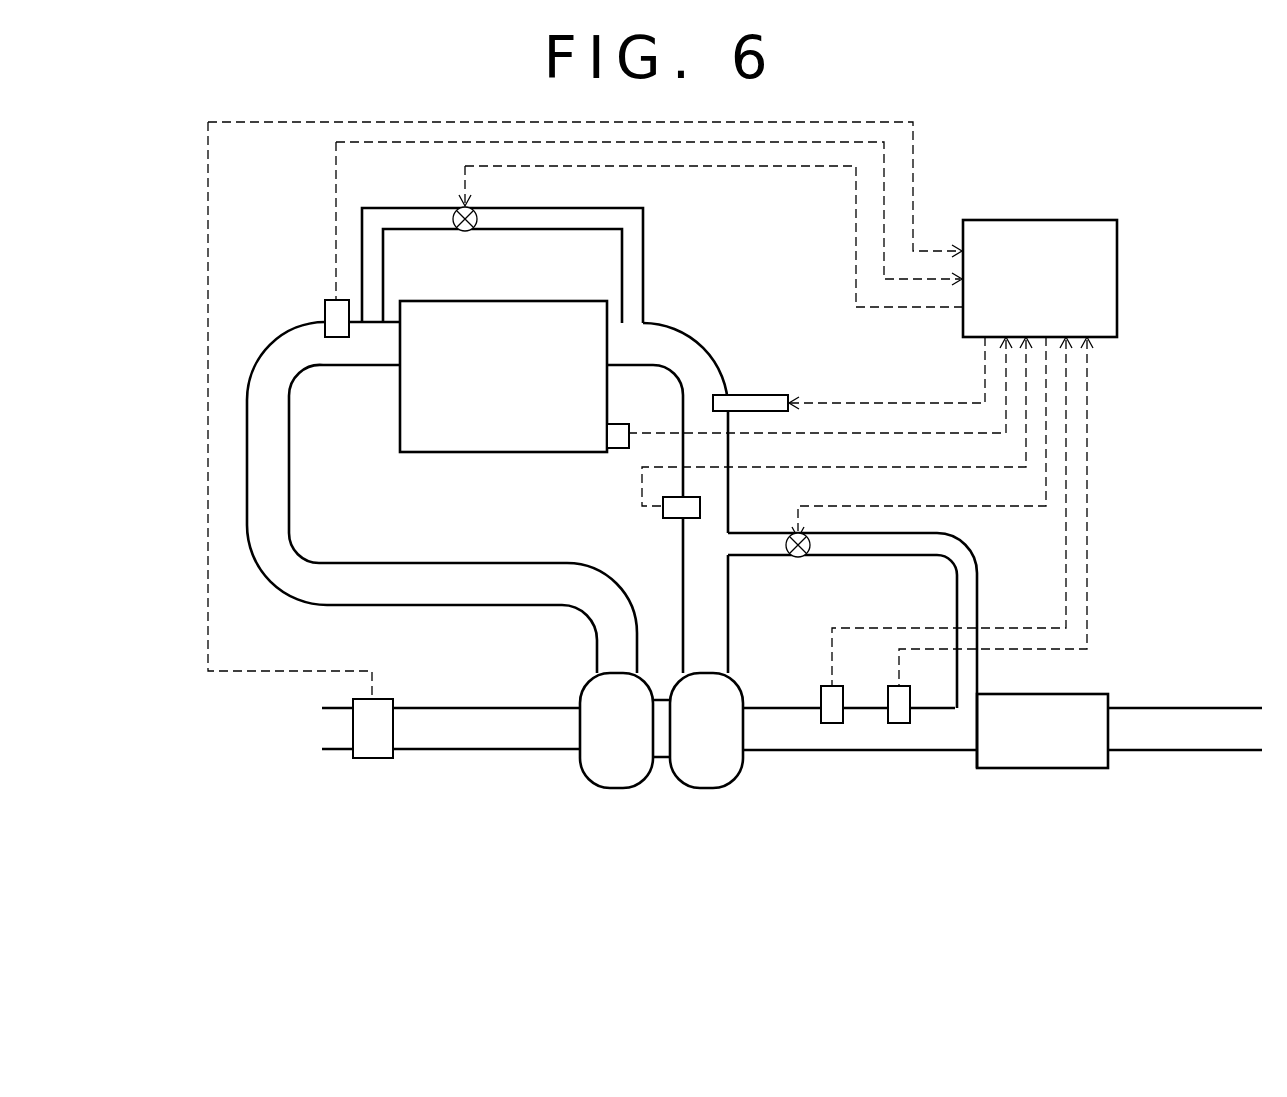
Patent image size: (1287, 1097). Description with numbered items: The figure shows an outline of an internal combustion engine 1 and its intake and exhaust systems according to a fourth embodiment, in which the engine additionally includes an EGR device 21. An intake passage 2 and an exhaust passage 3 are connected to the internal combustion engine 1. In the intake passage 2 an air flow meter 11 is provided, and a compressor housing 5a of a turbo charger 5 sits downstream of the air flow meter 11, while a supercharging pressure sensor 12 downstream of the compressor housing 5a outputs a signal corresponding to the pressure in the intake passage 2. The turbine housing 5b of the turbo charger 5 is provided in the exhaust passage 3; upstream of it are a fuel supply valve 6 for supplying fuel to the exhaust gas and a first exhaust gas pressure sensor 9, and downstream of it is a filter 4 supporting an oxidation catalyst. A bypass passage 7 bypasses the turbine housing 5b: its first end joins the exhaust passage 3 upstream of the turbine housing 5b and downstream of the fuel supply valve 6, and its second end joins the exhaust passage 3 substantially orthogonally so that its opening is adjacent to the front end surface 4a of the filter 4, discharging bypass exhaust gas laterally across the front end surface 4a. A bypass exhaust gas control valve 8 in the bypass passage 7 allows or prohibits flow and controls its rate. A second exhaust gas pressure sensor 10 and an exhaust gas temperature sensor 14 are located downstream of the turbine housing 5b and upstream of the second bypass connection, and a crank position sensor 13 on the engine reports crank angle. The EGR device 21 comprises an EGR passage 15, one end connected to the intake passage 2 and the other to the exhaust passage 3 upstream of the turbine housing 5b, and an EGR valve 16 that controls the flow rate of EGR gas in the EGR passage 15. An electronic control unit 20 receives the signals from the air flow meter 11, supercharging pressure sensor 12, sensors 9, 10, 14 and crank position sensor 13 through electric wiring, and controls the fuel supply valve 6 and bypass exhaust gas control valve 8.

The internal combustion engine 1 is at (500, 301).
The intake passage 2 is at (272, 588).
The exhaust passage 3 is at (700, 335).
The filter 4 is at (1032, 770).
The front end surface 4a is at (975, 732).
The turbo charger 5 is at (661, 789).
The compressor housing 5a is at (621, 789).
The turbine housing 5b is at (706, 763).
The fuel supply valve 6 is at (760, 395).
The bypass passage 7 is at (975, 560).
The bypass exhaust gas control valve 8 is at (795, 557).
The first exhaust gas pressure sensor 9 is at (672, 518).
The second exhaust gas pressure sensor 10 is at (821, 690).
The air flow meter 11 is at (372, 760).
The supercharging pressure sensor 12 is at (325, 303).
The crank position sensor 13 is at (620, 448).
The exhaust gas temperature sensor 14 is at (888, 690).
The EGR passage 15 is at (600, 208).
The EGR valve 16 is at (463, 232).
The electronic control unit 20 is at (1015, 220).
The EGR device 21 is at (659, 243).